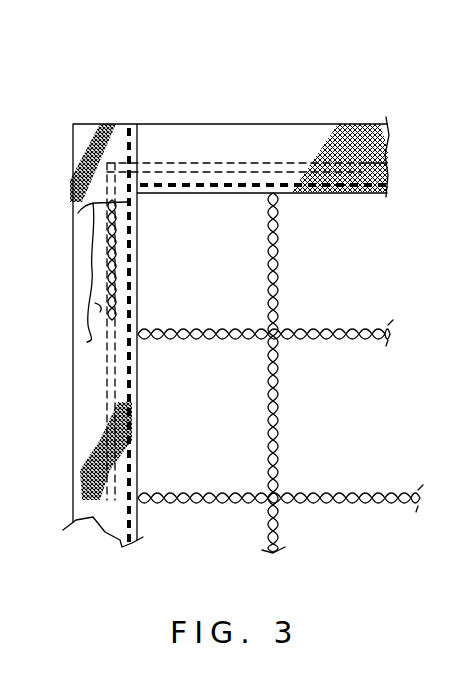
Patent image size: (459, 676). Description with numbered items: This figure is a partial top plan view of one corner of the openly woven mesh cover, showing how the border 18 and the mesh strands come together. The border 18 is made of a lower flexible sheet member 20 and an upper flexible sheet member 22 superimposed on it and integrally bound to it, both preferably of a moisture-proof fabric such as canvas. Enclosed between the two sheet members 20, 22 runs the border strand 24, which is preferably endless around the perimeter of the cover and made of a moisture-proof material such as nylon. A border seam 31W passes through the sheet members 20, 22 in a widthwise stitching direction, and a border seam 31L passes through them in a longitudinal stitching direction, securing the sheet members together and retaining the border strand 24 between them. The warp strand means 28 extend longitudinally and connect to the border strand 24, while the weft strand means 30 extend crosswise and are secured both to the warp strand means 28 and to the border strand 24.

The border 18 is at (148, 120).
The lower flexible sheet member 20 is at (102, 327).
The upper flexible sheet member 22 is at (90, 386).
The border strand 24 is at (112, 267).
The warp strand means 28 is at (262, 297).
The weft strand means 30 is at (204, 345).
The border seam 31L is at (127, 181).
The border seam 31W is at (187, 182).